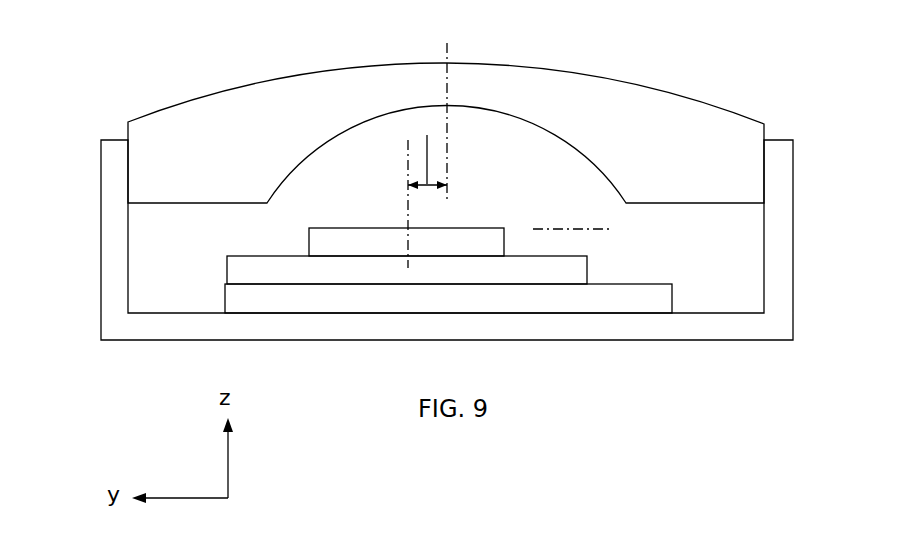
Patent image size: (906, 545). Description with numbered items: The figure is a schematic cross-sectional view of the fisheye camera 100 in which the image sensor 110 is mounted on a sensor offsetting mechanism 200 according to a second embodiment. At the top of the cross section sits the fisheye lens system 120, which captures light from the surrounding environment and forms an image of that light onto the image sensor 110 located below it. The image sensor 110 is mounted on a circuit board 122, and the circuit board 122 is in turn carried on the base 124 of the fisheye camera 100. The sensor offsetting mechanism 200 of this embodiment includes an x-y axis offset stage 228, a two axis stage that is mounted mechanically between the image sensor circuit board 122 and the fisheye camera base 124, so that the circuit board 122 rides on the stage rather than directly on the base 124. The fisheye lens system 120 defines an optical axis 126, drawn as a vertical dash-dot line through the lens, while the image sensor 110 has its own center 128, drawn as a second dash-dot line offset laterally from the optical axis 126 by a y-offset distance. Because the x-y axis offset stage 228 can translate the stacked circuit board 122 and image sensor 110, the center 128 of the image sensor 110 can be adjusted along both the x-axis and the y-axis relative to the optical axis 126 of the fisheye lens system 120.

The fisheye camera 100 is at (190, 70).
The image sensor 110 is at (483, 228).
The fisheye lens system 120 is at (307, 70).
The circuit board 122 is at (587, 268).
The base 124 is at (712, 340).
The optical axis 126 is at (445, 78).
The center 128 is at (400, 185).
The sensor offsetting mechanism 200 is at (442, 299).
The x-y axis offset stage 228 is at (225, 303).